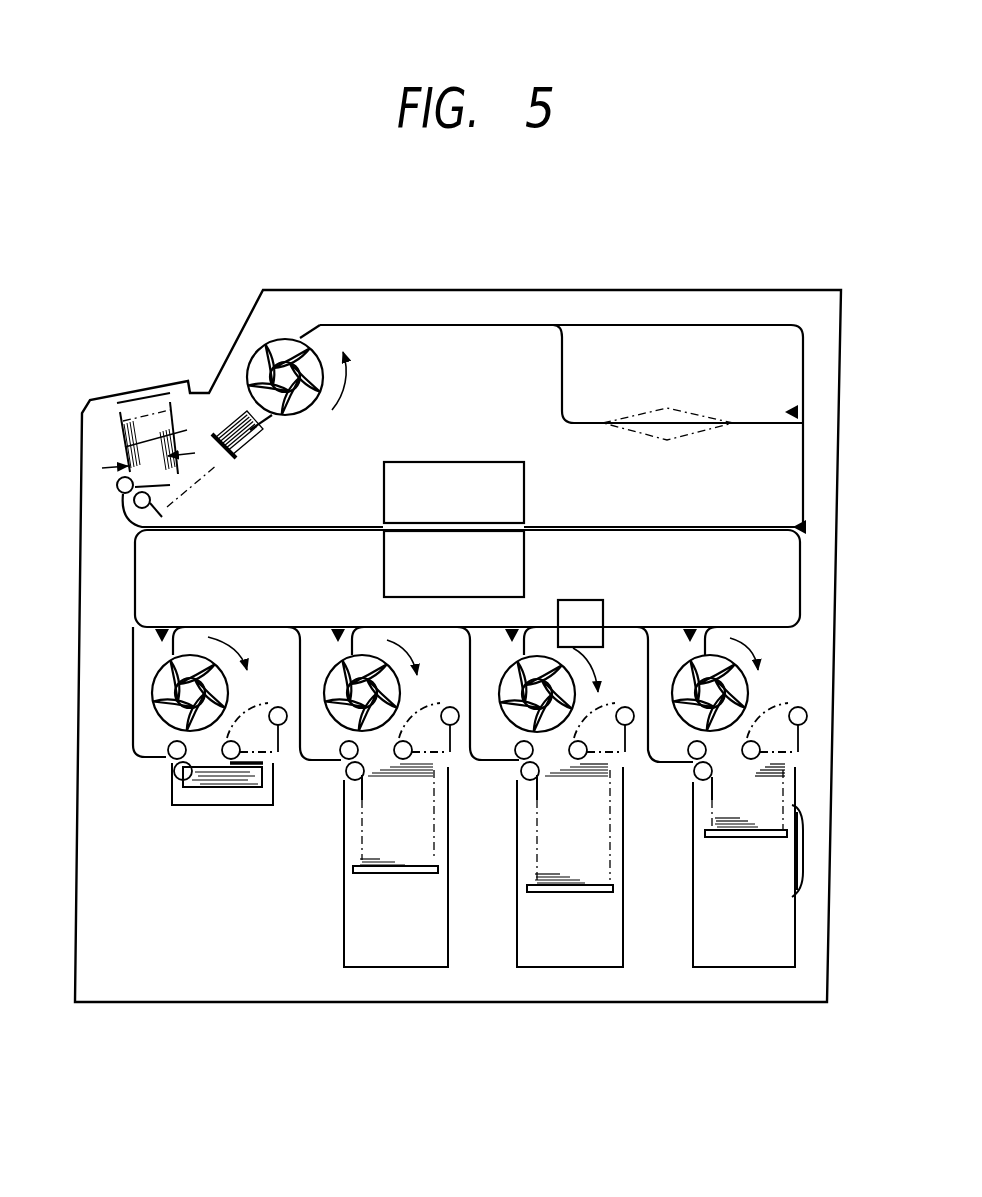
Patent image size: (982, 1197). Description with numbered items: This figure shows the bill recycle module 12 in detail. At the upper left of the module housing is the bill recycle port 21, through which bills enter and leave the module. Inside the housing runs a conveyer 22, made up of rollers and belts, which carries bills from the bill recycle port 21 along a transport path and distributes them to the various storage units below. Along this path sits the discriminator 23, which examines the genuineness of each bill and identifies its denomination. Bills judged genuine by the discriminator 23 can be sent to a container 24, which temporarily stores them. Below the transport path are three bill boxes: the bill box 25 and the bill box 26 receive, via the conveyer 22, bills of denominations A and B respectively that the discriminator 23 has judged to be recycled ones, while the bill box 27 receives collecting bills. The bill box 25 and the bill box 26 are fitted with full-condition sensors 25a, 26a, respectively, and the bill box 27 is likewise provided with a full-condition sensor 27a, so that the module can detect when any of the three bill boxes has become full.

The bill recycle module 12 is at (605, 290).
The bill recycle port 21 is at (135, 390).
The conveyer 22 is at (328, 527).
The discriminator 23 is at (460, 460).
The container 24 is at (215, 807).
The bill box 25 is at (398, 967).
The full-condition sensor 25a is at (344, 788).
The bill box 26 is at (572, 967).
The full-condition sensor 26a is at (517, 793).
The bill box 27 is at (740, 967).
The full-condition sensor 27a is at (693, 792).